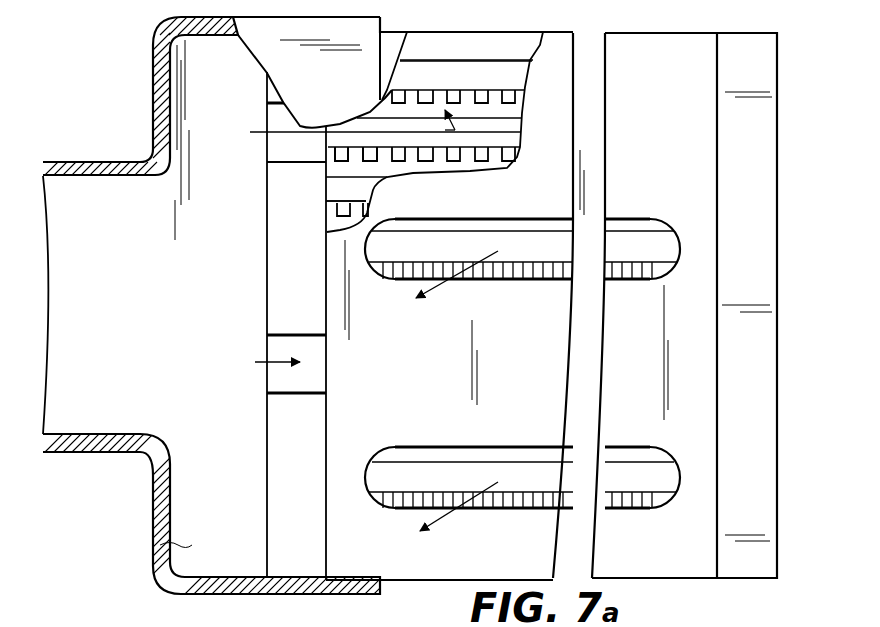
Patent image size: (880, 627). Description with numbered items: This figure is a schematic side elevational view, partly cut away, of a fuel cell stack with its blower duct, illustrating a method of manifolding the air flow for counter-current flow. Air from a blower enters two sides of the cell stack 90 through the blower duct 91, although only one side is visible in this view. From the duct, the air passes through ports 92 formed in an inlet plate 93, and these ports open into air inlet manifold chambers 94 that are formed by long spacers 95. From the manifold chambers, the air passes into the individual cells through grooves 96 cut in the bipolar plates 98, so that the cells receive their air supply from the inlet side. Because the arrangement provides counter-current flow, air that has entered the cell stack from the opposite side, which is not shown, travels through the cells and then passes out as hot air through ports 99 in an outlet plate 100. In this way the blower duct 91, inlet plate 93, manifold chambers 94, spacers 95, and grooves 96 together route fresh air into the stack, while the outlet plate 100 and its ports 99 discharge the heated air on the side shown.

The cell stack 90 is at (512, 316).
The blower duct 91 is at (155, 553).
The ports 92 is at (298, 148).
The inlet plate 93 is at (280, 481).
The air inlet manifold chambers 94 is at (507, 133).
The long spacers 95 is at (472, 73).
The grooves 96 is at (347, 159).
The bipolar plates 98 is at (512, 112).
The ports 99 is at (513, 238).
The outlet plate 100 is at (540, 553).